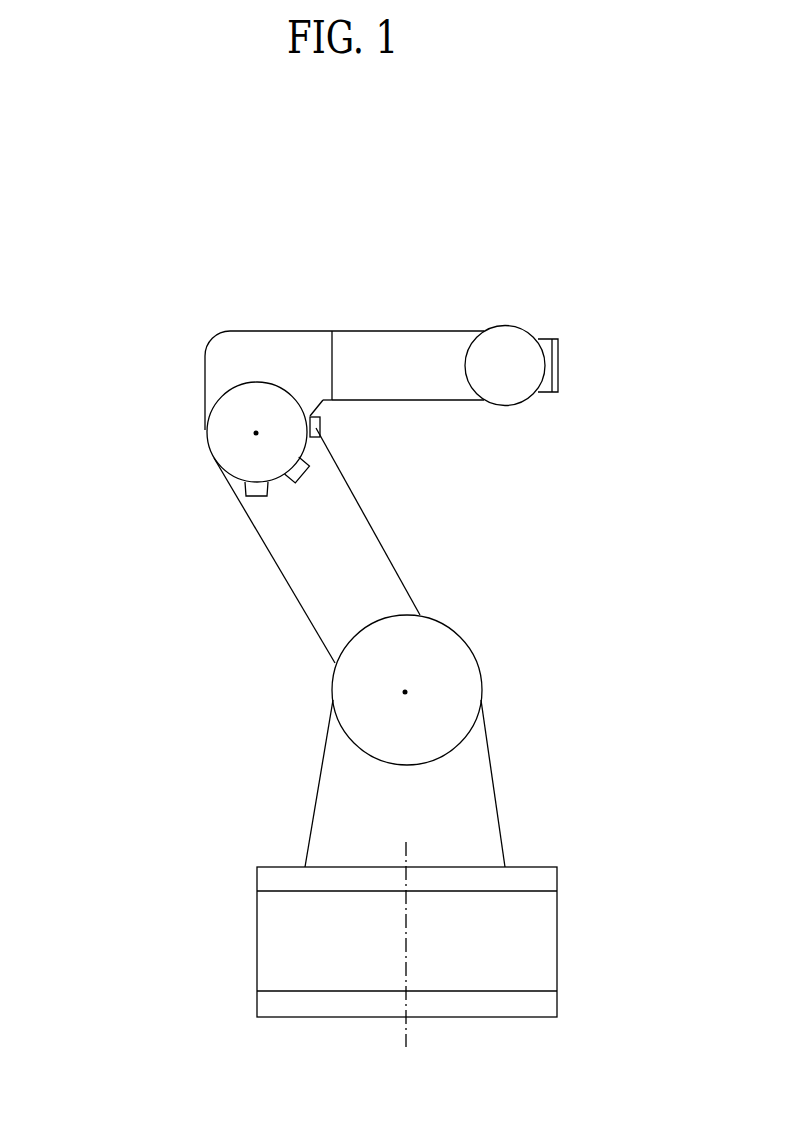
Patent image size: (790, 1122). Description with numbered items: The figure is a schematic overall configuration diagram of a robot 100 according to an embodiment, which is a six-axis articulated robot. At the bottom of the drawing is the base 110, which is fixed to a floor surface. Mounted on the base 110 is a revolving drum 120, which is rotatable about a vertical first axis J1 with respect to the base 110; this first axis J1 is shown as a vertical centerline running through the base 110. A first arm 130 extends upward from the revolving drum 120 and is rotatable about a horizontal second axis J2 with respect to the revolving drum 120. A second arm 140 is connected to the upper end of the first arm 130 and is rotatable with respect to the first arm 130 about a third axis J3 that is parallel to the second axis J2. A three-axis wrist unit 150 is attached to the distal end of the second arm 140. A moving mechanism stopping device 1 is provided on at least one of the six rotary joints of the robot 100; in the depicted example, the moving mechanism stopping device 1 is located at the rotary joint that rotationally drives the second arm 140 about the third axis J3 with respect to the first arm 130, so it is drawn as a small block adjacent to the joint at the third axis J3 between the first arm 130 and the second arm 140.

The robot 100 is at (120, 306).
The base 110 is at (572, 937).
The revolving drum 120 is at (508, 769).
The first arm 130 is at (391, 536).
The second arm 140 is at (262, 315).
The three-axis wrist unit 150 is at (433, 317).
The moving mechanism stopping device 1 is at (336, 432).
The first axis J1 is at (408, 1038).
The second axis J2 is at (407, 690).
The third axis J3 is at (258, 439).